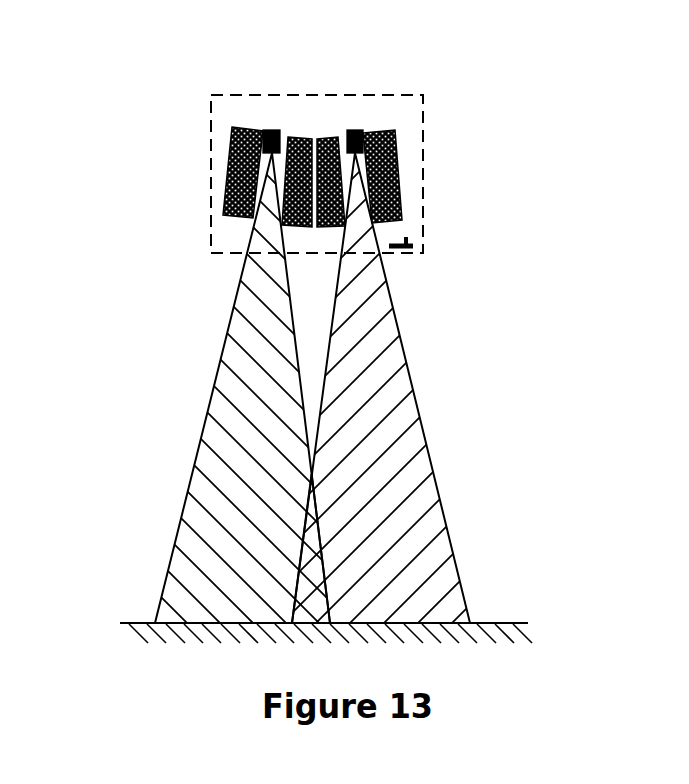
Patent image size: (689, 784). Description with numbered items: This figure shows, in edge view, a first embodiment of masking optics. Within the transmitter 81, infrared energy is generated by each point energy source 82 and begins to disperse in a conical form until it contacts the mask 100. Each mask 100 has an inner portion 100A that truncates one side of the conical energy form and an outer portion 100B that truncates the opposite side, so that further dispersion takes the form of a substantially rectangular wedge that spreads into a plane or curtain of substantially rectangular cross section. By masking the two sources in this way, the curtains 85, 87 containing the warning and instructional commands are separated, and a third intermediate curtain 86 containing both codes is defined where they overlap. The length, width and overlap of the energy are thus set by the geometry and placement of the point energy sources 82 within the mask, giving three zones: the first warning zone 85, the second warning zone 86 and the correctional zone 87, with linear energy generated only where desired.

The mask 100 is at (216, 122).
The inner portion 100A is at (238, 153).
The outer portion 100B is at (300, 152).
The point energy source 82 is at (279, 128).
The transmitter 81 is at (425, 158).
The first warning zone 85 is at (407, 472).
The second warning zone 86 is at (307, 563).
The correctional zone 87 is at (235, 565).